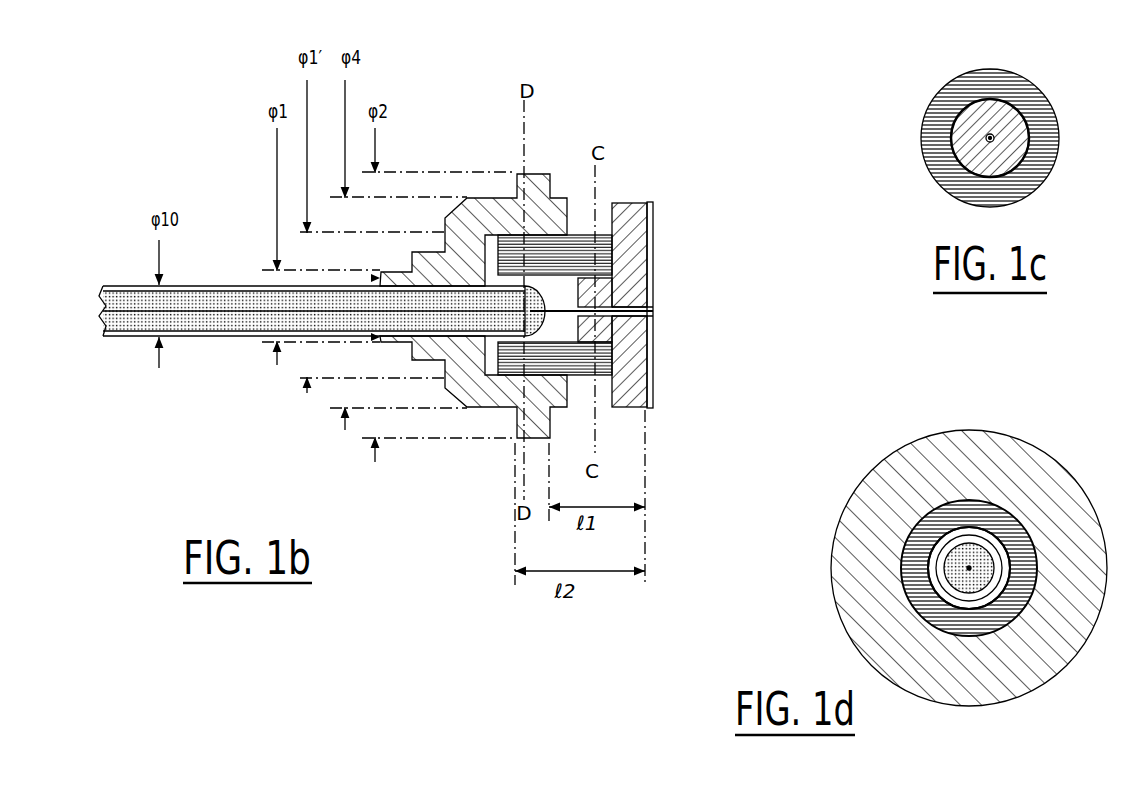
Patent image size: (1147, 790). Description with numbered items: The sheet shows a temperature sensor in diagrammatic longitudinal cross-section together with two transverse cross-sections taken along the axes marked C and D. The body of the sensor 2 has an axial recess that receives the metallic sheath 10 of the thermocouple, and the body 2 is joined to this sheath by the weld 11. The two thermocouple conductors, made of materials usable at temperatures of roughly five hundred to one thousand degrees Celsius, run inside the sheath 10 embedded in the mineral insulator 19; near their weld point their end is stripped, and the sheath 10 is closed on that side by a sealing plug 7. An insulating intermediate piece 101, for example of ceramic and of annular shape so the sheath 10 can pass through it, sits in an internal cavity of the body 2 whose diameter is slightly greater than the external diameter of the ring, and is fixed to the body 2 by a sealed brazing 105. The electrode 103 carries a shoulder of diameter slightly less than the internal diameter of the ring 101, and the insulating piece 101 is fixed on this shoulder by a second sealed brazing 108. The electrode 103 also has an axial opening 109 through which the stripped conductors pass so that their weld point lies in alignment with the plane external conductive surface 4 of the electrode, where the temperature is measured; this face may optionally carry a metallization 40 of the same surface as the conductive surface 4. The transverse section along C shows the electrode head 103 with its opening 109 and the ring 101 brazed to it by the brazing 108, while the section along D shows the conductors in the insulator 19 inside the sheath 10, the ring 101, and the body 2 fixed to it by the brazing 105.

In FIG. 1b, the body of the sensor 2 is at (468, 386).
In FIG. 1d, the body of the sensor 2 is at (1055, 492).
In FIG. 1b, the plane external conductive surface 4 is at (656, 380).
In FIG. 1b, the sealing plug 7 is at (544, 287).
In FIG. 1b, the metallic sheath 10 is at (263, 338).
In FIG. 1d, the metallic sheath 10 is at (940, 589).
In FIG. 1b, the weld 11 is at (374, 341).
In FIG. 1b, the mineral insulator 19 is at (139, 322).
In FIG. 1d, the mineral insulator 19 is at (943, 568).
In FIG. 1b, the metallization 40 is at (649, 396).
In FIG. 1b, the insulating intermediate piece 101 is at (586, 253).
In FIG. 1c, the insulating intermediate piece 101 is at (1002, 83).
In FIG. 1d, the insulating intermediate piece 101 is at (1045, 612).
In FIG. 1b, the electrode 103 is at (632, 282).
In FIG. 1c, the electrode 103 is at (1017, 145).
In FIG. 1b, the sealed brazing 105 is at (511, 381).
In FIG. 1d, the sealed brazing 105 is at (1001, 506).
In FIG. 1b, the sealed brazing 108 is at (604, 270).
In FIG. 1c, the sealed brazing 108 is at (1028, 110).
In FIG. 1b, the axial opening 109 is at (617, 323).
In FIG. 1c, the axial opening 109 is at (977, 148).